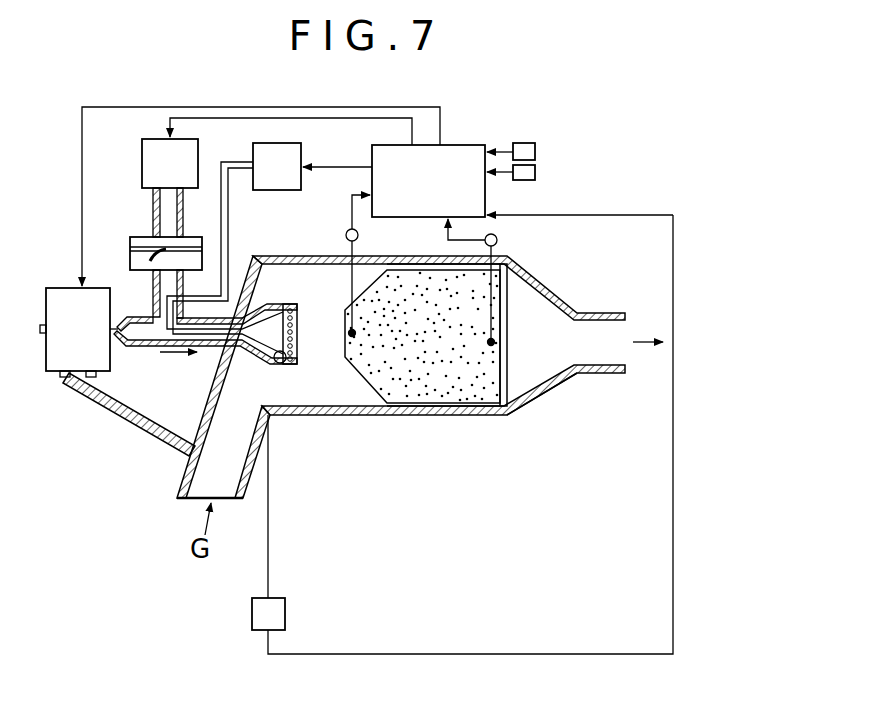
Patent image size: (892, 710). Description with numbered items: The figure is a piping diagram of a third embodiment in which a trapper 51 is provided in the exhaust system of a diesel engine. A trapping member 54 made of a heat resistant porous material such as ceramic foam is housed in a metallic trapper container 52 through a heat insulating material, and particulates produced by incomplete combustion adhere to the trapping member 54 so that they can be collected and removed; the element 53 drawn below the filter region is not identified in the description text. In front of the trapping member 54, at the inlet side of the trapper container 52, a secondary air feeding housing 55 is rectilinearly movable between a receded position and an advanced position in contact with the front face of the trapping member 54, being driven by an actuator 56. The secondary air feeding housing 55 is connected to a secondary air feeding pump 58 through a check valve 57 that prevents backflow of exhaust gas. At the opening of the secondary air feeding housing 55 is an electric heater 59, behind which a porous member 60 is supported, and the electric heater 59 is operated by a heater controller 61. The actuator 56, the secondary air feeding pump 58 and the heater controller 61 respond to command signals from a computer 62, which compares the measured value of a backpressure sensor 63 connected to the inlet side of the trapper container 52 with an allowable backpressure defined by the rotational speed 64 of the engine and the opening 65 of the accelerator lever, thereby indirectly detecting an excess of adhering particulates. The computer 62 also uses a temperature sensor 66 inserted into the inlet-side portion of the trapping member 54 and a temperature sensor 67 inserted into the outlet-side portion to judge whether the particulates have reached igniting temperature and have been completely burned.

The trapper 51 is at (566, 379).
The trapper container 52 is at (547, 398).
The particulate filter 53 is at (440, 416).
The trapping member 54 is at (493, 383).
The secondary air feeding housing 55 is at (252, 346).
The actuator 56 is at (60, 358).
The check valve 57 is at (130, 251).
The secondary air feeding pump 58 is at (142, 165).
The electric heater 59 is at (299, 338).
The porous member 60 is at (282, 363).
The heater controller 61 is at (298, 160).
The computer 62 is at (470, 148).
The backpressure sensor 63 is at (252, 614).
The rotational speed 64 is at (528, 144).
The opening of accelerator lever 65 is at (528, 178).
The temperature sensor 66 is at (345, 236).
The temperature sensor 67 is at (498, 240).